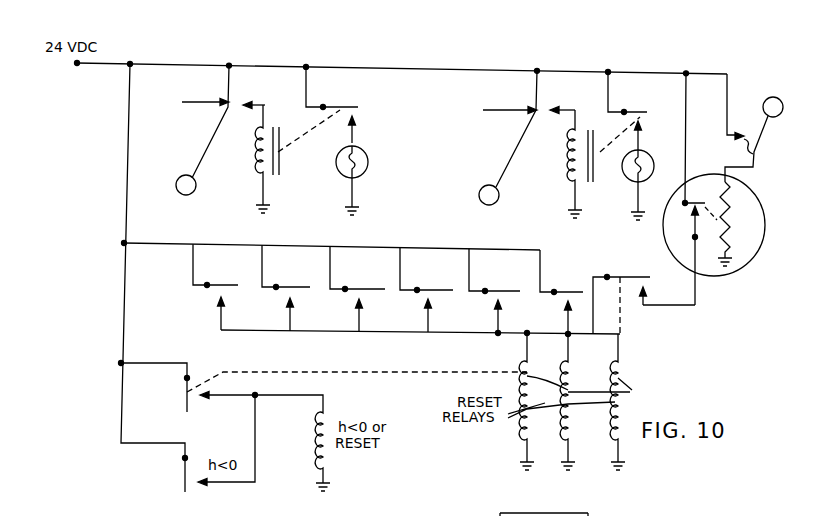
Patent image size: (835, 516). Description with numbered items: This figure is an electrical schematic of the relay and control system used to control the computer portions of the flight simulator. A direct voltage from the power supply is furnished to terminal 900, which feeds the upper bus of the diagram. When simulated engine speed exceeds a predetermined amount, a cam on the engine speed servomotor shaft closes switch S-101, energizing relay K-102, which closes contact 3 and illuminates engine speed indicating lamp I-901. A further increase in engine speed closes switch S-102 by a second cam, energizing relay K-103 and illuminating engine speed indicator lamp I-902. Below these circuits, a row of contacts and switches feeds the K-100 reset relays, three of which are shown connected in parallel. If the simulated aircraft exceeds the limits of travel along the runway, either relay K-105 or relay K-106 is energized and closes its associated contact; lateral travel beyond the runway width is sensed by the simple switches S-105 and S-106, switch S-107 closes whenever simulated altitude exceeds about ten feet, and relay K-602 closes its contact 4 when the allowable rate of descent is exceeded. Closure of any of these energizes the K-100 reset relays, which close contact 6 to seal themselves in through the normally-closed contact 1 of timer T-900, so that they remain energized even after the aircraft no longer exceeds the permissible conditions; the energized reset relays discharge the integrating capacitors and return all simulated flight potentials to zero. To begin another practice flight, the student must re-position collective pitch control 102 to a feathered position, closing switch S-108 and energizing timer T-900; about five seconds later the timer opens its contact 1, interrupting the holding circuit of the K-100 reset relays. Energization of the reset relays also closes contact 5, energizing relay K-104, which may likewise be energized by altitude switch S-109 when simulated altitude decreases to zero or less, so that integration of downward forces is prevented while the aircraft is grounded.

The terminal 900 is at (394, 74).
The switch S-101 is at (256, 93).
The relay K-102 is at (254, 164).
The contact 3 is at (332, 88).
The engine speed indicating lamp I-901 is at (367, 168).
The switch S-102 is at (597, 95).
The relay K-103 is at (566, 178).
The engine speed indicator lamp I-902 is at (665, 150).
The timer T-900 is at (763, 206).
The normally-closed contact 1 is at (690, 209).
The switch S-108 is at (765, 128).
The collective pitch control 102 is at (817, 134).
The relay K-105 is at (219, 312).
The relay K-106 is at (292, 316).
The switch S-105 is at (361, 315).
The switch S-106 is at (430, 315).
The switch S-107 is at (497, 322).
The relay K-602 is at (572, 291).
The contact 4 is at (568, 326).
The contact 6 is at (628, 272).
The reset relays K-100 is at (595, 401).
The contact 5 is at (228, 396).
The relay K-104 is at (348, 409).
The altitude switch S-109 is at (226, 480).